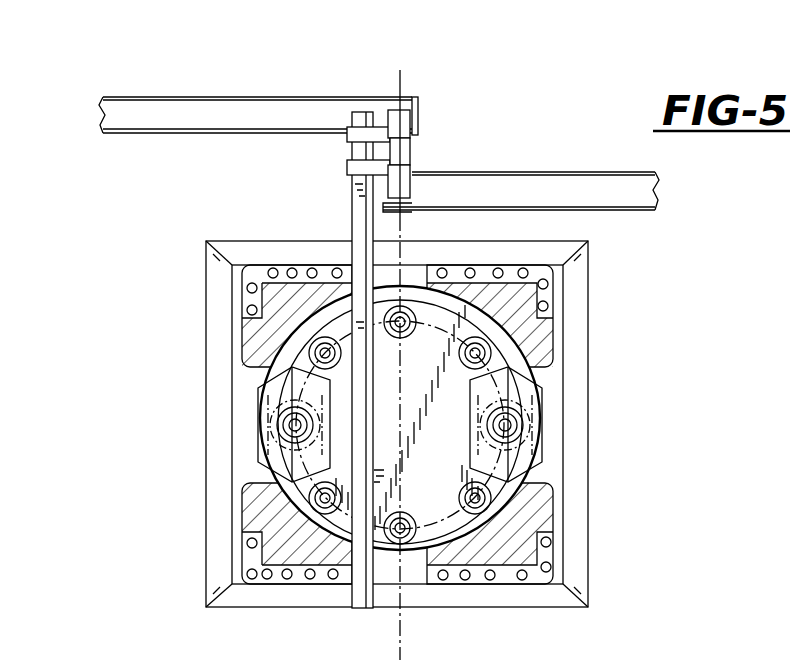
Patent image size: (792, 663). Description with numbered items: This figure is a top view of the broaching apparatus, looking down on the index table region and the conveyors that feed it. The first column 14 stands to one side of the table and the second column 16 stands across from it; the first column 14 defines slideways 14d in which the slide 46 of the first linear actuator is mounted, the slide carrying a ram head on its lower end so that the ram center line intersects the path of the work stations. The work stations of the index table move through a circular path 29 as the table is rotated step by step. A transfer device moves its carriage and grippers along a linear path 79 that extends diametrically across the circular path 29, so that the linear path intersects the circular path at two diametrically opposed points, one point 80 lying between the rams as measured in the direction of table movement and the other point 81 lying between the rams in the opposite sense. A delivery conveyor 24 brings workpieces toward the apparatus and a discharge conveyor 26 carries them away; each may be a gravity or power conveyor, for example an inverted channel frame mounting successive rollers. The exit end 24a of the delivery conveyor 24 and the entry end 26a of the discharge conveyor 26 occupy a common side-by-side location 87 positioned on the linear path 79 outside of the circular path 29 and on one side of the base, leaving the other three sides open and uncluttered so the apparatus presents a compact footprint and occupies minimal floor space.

The first column 14 is at (241, 340).
The slideways 14d is at (290, 481).
The second column 16 is at (562, 330).
The delivery conveyor 24 is at (258, 127).
The exit end of delivery conveyor 24a is at (300, 121).
The discharge conveyor 26 is at (521, 150).
The entry end of discharge conveyor 26a is at (448, 189).
The circular path 29 is at (484, 383).
The slide 46 is at (258, 400).
The linear path 79 is at (400, 596).
The intersection point 80 is at (404, 313).
The intersection point 81 is at (475, 491).
The common side-by-side location 87 is at (416, 118).